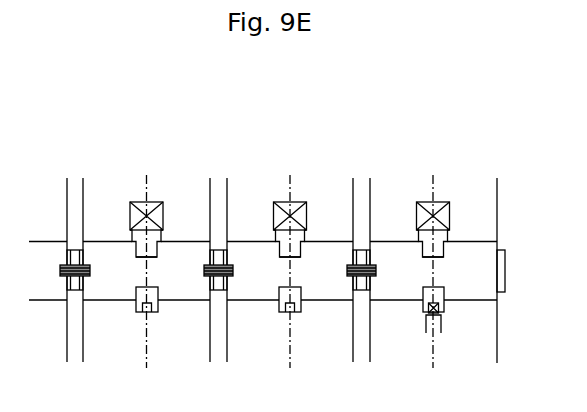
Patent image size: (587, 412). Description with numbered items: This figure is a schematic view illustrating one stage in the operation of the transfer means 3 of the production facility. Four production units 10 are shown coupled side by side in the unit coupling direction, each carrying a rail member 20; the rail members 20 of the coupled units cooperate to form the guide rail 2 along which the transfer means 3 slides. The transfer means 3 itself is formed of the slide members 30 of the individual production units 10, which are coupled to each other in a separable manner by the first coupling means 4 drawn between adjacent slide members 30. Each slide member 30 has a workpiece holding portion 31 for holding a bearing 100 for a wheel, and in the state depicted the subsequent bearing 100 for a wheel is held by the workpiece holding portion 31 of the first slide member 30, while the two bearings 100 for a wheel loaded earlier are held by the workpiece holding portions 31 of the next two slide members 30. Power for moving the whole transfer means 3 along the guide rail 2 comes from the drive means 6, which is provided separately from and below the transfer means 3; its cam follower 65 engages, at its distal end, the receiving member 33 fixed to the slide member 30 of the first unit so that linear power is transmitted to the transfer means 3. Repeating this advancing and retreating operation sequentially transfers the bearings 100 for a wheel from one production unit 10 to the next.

The guide rail 2 is at (508, 282).
The transfer means 3 is at (263, 306).
The first coupling means 4 is at (61, 263).
The drive means 6 is at (416, 342).
The production unit 10 is at (44, 168).
The rail member 20 is at (505, 261).
The slide member 30 is at (42, 290).
The workpiece holding portion 31 is at (140, 246).
The receiving member 33 is at (137, 303).
The cam follower 65 is at (426, 315).
The bearing for a wheel 100 is at (129, 207).